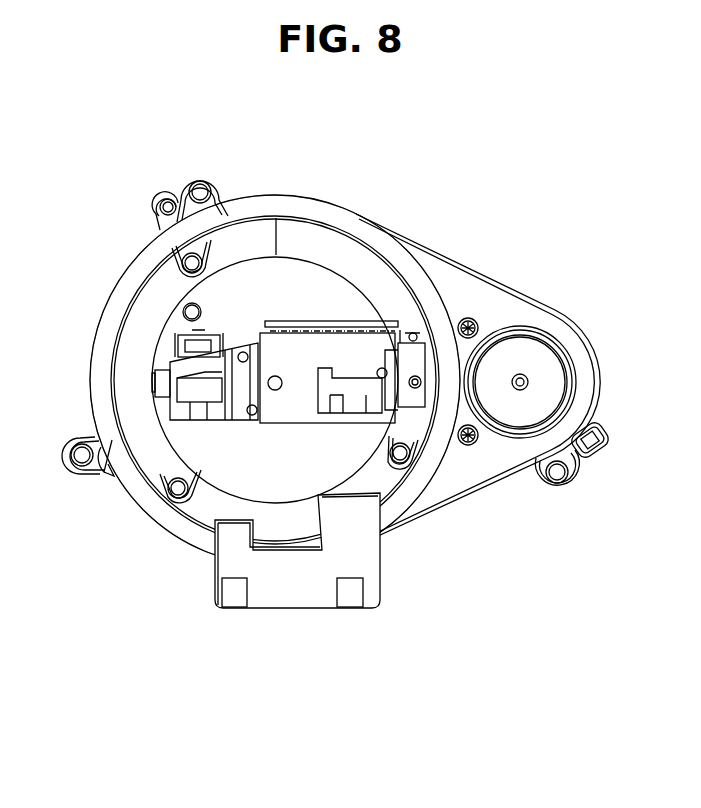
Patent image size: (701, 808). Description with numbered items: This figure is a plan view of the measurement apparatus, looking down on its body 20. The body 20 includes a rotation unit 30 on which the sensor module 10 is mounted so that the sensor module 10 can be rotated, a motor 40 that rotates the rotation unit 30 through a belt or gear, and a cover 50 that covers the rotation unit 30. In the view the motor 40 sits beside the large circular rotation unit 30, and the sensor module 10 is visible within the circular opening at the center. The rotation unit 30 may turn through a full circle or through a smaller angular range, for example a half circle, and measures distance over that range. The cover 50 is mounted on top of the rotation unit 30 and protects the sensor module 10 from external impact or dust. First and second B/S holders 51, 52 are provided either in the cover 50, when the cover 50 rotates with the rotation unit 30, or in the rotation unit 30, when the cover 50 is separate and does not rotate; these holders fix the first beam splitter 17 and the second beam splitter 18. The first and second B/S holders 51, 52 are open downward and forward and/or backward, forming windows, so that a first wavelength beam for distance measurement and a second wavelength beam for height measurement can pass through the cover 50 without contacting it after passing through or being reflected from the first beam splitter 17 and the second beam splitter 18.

The sensor module 10 is at (338, 313).
The first beam splitter 17 is at (347, 606).
The second beam splitter 18 is at (350, 592).
The body 20 is at (468, 303).
The rotation unit 30 is at (326, 212).
The motor 40 is at (543, 371).
The cover 50 is at (118, 260).
The first B/S holder 51 is at (354, 600).
The second B/S holder 52 is at (297, 550).